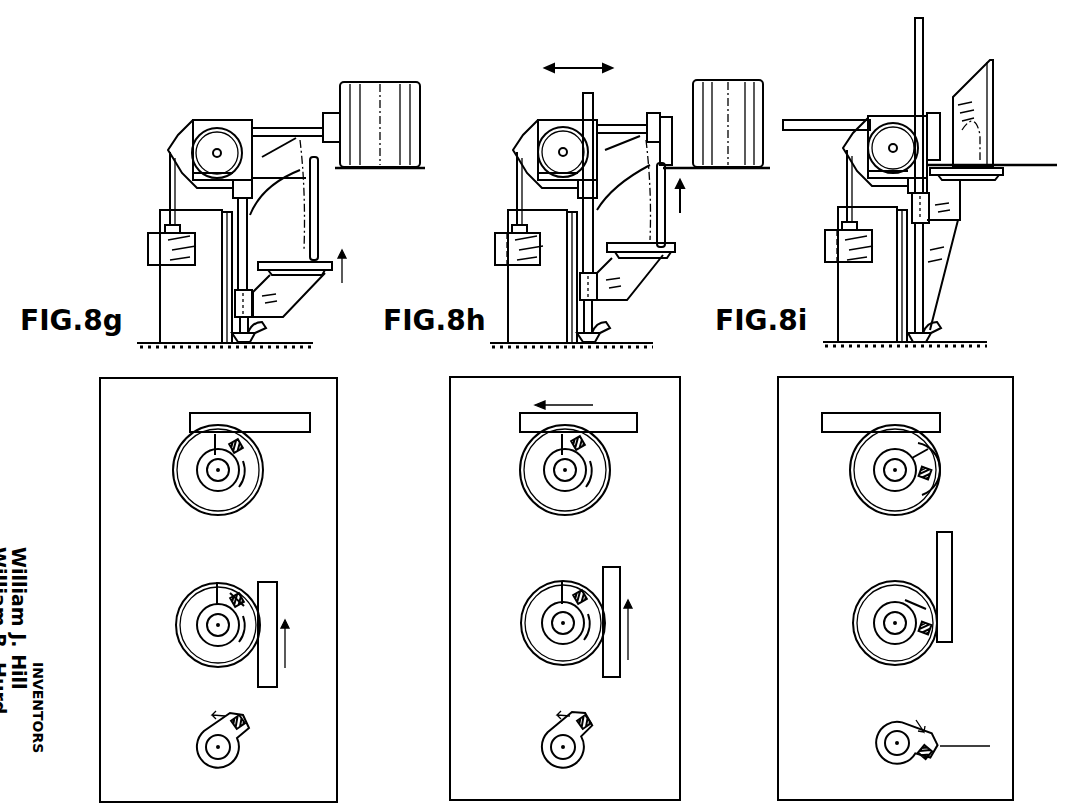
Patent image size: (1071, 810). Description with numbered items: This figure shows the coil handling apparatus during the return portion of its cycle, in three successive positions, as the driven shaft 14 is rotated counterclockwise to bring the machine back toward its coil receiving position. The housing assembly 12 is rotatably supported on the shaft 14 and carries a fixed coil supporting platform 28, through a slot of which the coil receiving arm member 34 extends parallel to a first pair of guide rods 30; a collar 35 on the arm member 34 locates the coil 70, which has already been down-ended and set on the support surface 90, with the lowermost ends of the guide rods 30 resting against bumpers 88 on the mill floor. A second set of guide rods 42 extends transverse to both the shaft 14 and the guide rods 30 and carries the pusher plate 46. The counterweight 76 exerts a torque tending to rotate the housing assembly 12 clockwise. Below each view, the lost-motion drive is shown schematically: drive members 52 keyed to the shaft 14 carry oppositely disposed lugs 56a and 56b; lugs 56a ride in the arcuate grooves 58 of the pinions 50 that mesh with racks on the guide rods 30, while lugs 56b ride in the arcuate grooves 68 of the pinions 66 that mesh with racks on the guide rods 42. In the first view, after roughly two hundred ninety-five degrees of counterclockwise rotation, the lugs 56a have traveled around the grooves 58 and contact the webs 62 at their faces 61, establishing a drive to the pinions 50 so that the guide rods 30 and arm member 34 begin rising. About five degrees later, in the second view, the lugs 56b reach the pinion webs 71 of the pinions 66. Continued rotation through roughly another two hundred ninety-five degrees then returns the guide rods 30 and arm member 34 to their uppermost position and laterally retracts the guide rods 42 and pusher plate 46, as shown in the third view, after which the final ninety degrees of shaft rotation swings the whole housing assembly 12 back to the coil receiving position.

In FIG. 8G, the housing assembly 12 is at (211, 124).
In FIG. 8H, the housing assembly 12 is at (553, 124).
In FIG. 8I, the housing assembly 12 is at (883, 120).
In FIG. 8G, the driven shaft 14 is at (220, 752).
In FIG. 8H, the driven shaft 14 is at (558, 752).
In FIG. 8I, the driven shaft 14 is at (893, 752).
In FIG. 8G, the coil supporting platform 28 is at (277, 178).
In FIG. 8G, the guide rods 30 is at (249, 258).
In FIG. 8H, the guide rods 30 is at (594, 252).
In FIG. 8I, the guide rods 30 is at (925, 32).
In FIG. 8G, the coil receiving arm member 34 is at (318, 224).
In FIG. 8H, the coil receiving arm member 34 is at (665, 228).
In FIG. 8I, the coil receiving arm member 34 is at (994, 93).
In FIG. 8G, the collar 35 is at (323, 273).
In FIG. 8H, the collar 35 is at (672, 253).
In FIG. 8I, the collar 35 is at (1000, 177).
In FIG. 8G, the second set of guide rods 42 is at (268, 128).
In FIG. 8H, the second set of guide rods 42 is at (603, 125).
In FIG. 8I, the second set of guide rods 42 is at (818, 120).
In FIG. 8G, the pusher plate 46 is at (330, 113).
In FIG. 8H, the pusher plate 46 is at (667, 115).
In FIG. 8I, the pusher plate 46 is at (936, 112).
In FIG. 8G, the pinions 50 is at (177, 632).
In FIG. 8H, the pinions 50 is at (523, 612).
In FIG. 8I, the pinions 50 is at (855, 596).
In FIG. 8G, the drive members 52 is at (240, 745).
In FIG. 8H, the drive members 52 is at (584, 743).
In FIG. 8I, the drive members 52 is at (885, 733).
In FIG. 8G, the drive lugs 56a is at (252, 608).
In FIG. 8H, the drive lugs 56a is at (585, 595).
In FIG. 8I, the drive lugs 56a is at (927, 641).
In FIG. 8G, the drive lugs 56b is at (247, 448).
In FIG. 8H, the drive lugs 56b is at (588, 445).
In FIG. 8I, the drive lugs 56b is at (933, 478).
In FIG. 8G, the arcuate grooves 58 is at (197, 652).
In FIG. 8H, the arcuate grooves 58 is at (538, 642).
In FIG. 8I, the arcuate grooves 58 is at (867, 640).
In FIG. 8G, the opposite faces of pinion webs 61 is at (243, 593).
In FIG. 8G, the radially extending webs 62 is at (222, 593).
In FIG. 8H, the radially extending webs 62 is at (568, 587).
In FIG. 8I, the radially extending webs 62 is at (918, 594).
In FIG. 8G, the second set of pinions 66 is at (263, 485).
In FIG. 8H, the second set of pinions 66 is at (610, 480).
In FIG. 8I, the second set of pinions 66 is at (857, 452).
In FIG. 8G, the arcuate grooves 68 is at (238, 498).
In FIG. 8H, the arcuate grooves 68 is at (585, 495).
In FIG. 8I, the arcuate grooves 68 is at (870, 485).
In FIG. 8G, the coil 70 is at (404, 94).
In FIG. 8H, the coil 70 is at (752, 93).
In FIG. 8G, the pinion webs 71 is at (222, 440).
In FIG. 8H, the pinion webs 71 is at (568, 445).
In FIG. 8I, the pinion webs 71 is at (930, 458).
In FIG. 8G, the counterweight 76 is at (148, 251).
In FIG. 8H, the counterweight 76 is at (495, 250).
In FIG. 8I, the counterweight 76 is at (825, 250).
In FIG. 8G, the bumpers 88 is at (264, 333).
In FIG. 8H, the bumpers 88 is at (608, 332).
In FIG. 8I, the bumpers 88 is at (939, 328).
In FIG. 8G, the support surface 90 is at (393, 170).
In FIG. 8H, the support surface 90 is at (765, 170).
In FIG. 8I, the support surface 90 is at (1045, 167).